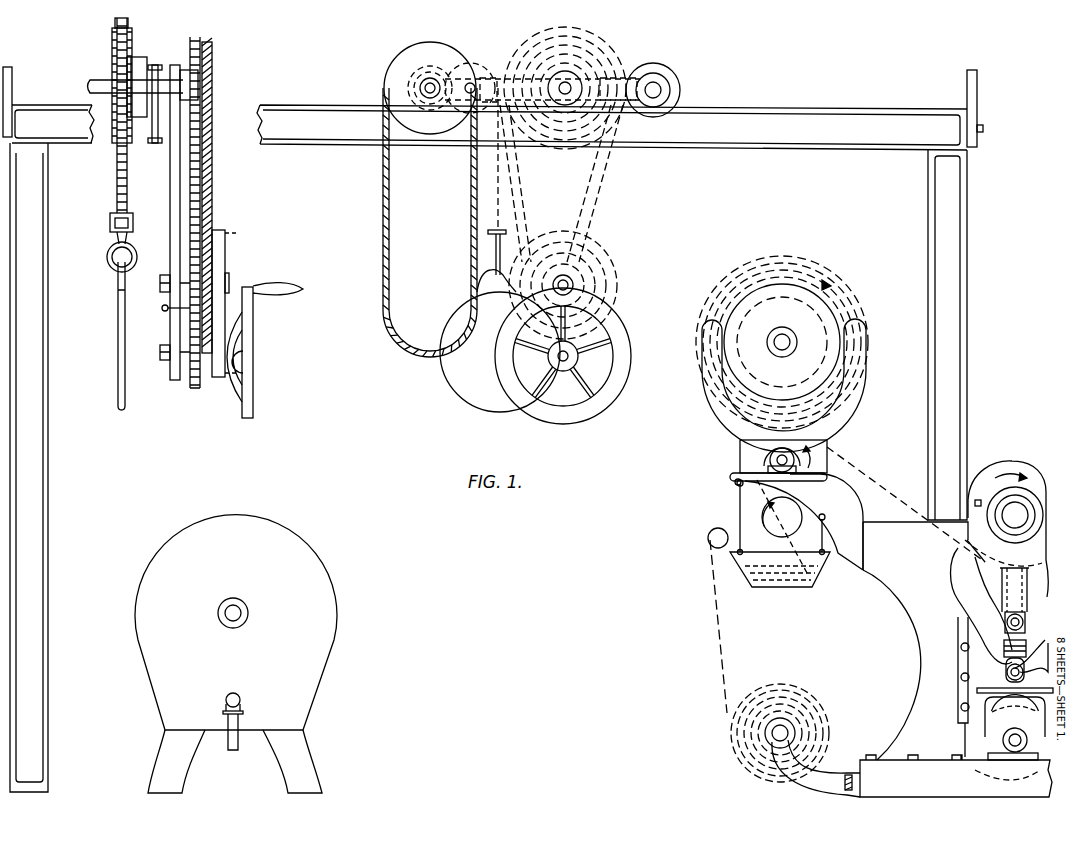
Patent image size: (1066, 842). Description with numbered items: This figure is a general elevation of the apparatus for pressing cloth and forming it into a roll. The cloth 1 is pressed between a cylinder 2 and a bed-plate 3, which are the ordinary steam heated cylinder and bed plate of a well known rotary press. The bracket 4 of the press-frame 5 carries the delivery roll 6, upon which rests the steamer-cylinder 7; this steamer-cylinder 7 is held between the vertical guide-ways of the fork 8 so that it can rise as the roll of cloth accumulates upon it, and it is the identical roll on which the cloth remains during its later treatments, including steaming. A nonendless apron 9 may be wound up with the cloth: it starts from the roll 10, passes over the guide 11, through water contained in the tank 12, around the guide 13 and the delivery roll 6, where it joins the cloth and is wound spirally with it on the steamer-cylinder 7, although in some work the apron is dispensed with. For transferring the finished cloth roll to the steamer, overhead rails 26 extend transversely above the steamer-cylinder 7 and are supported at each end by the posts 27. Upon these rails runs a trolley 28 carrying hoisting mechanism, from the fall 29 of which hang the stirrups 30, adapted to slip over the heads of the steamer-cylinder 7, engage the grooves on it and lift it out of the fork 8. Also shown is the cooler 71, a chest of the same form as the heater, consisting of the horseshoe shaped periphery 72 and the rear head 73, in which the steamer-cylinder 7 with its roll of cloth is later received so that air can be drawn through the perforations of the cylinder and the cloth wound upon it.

The cloth 1 is at (906, 504).
The cylinder 2 is at (1002, 463).
The bed-plate 3 is at (986, 587).
The bracket 4 is at (796, 523).
The press-frame 5 is at (956, 659).
The delivery roll 6 is at (779, 459).
The steamer-cylinder 7 is at (782, 342).
The fork 8 is at (857, 405).
The nonendless apron 9 is at (717, 630).
The roll 10 is at (795, 733).
The guide 11 is at (720, 548).
The tank 12 is at (780, 533).
The guide 13 is at (782, 517).
The overhead rails 26 is at (493, 108).
The posts 27 is at (488, 467).
The trolley 28 is at (177, 65).
The fall 29 is at (116, 172).
The stirrups 30 is at (126, 400).
The cooler 71 is at (218, 733).
The horseshoe shaped periphery 72 is at (148, 669).
The rear head 73 is at (233, 586).